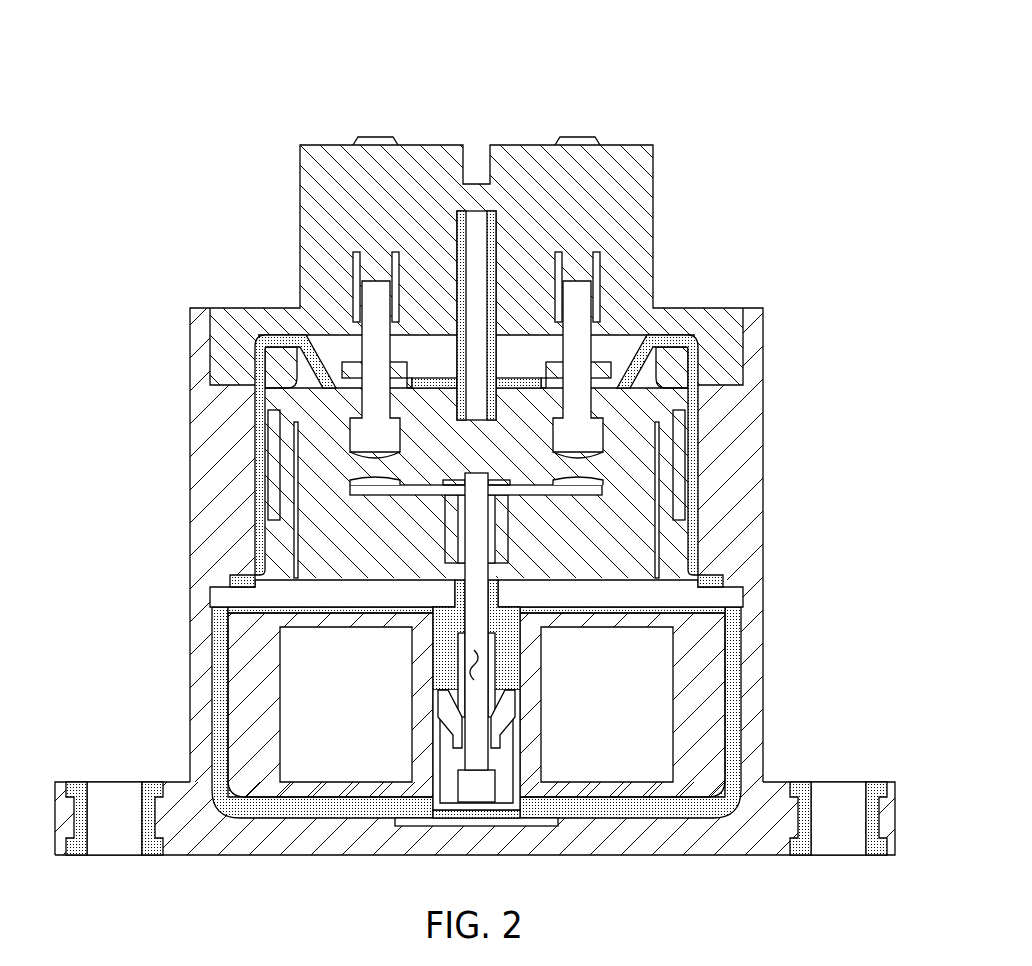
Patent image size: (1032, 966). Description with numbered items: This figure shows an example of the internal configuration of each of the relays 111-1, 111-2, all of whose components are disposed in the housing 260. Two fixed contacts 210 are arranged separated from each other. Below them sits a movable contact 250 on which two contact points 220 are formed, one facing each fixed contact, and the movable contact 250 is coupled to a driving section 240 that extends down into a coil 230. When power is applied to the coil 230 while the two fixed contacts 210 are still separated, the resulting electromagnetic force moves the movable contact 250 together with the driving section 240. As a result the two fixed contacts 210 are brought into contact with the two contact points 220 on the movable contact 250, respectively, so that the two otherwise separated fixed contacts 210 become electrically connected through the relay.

The relay 111-1 is at (475, 436).
The relay 111-2 is at (475, 496).
The fixed contacts 210 is at (385, 434).
The contact points 220 is at (578, 478).
The coil 230 is at (640, 685).
The driving section 240 is at (468, 663).
The movable contact 250 is at (382, 550).
The housing 260 is at (237, 425).